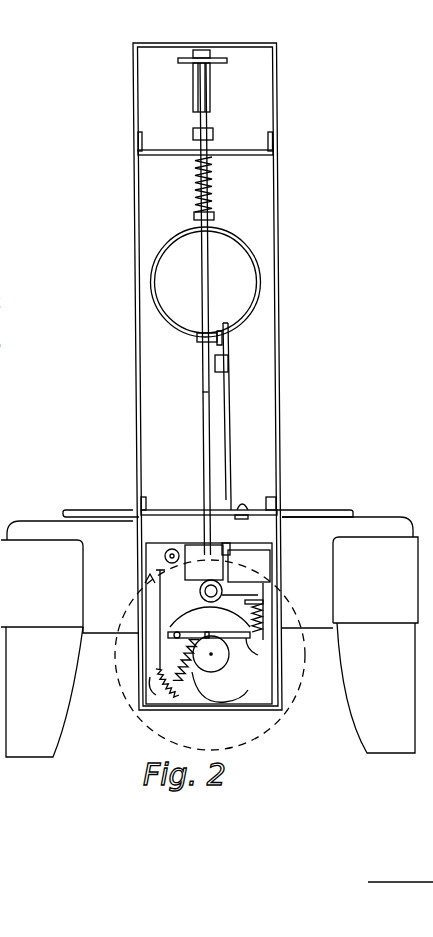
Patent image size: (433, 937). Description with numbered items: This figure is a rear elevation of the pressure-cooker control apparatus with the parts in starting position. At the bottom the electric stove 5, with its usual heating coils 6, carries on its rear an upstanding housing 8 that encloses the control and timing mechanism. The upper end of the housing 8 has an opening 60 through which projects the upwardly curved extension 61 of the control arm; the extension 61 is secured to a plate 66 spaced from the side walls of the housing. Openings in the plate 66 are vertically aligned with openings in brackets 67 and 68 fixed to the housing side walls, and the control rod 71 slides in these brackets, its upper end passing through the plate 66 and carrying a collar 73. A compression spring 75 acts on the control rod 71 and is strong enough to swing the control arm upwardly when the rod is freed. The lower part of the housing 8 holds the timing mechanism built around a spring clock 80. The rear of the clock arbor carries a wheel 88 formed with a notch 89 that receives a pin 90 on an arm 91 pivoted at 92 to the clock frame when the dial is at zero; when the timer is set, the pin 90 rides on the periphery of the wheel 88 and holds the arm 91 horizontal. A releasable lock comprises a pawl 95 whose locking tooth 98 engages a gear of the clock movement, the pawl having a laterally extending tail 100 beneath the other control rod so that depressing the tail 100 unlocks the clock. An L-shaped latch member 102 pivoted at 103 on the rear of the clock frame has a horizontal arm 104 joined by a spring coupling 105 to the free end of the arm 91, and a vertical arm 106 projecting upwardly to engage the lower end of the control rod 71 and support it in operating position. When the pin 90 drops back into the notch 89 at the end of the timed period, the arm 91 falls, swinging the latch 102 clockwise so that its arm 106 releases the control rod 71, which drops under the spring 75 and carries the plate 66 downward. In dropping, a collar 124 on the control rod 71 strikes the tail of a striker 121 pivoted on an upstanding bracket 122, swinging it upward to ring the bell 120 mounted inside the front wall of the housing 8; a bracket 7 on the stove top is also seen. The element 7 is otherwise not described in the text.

The electric stove 5 is at (209, 647).
The heating coils 6 is at (89, 512).
The top plate 7 is at (159, 510).
The upstanding housing 8 is at (278, 224).
The opening 60 is at (212, 93).
The extension 61 is at (211, 107).
The plate 66 is at (223, 60).
The bracket 67 is at (256, 158).
The bracket 68 is at (268, 499).
The control rod 71 is at (204, 392).
The collar 73 is at (197, 51).
The compression spring 75 is at (214, 199).
The spring clock 80 is at (210, 655).
The wheel 88 is at (208, 661).
The notch 89 is at (226, 668).
The pin 90 is at (210, 621).
The arm 91 is at (244, 637).
The pivot 92 is at (170, 633).
The pawl 95 is at (157, 571).
The locking tooth 98 is at (158, 684).
The tail 100 is at (202, 542).
The latch member 102 is at (150, 580).
The pivot 103 is at (255, 580).
The horizontal arm 104 is at (223, 590).
The spring coupling 105 is at (264, 614).
The vertical arm 106 is at (229, 541).
The bell 120 is at (151, 280).
The striker 121 is at (215, 362).
The bracket 122 is at (232, 398).
The collar 124 is at (197, 338).